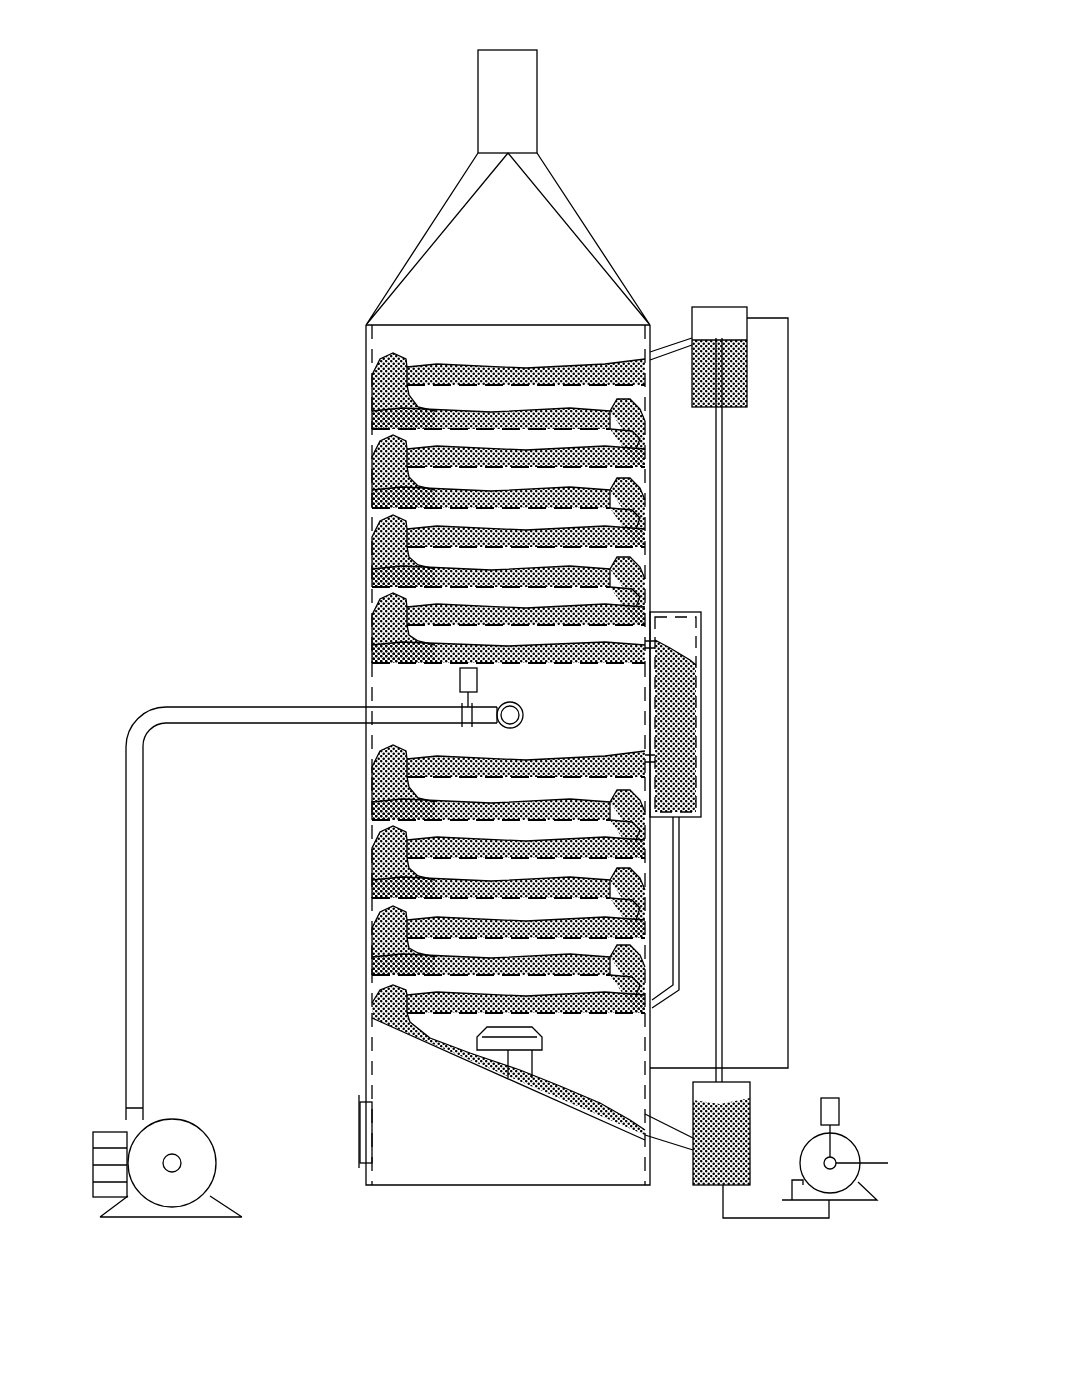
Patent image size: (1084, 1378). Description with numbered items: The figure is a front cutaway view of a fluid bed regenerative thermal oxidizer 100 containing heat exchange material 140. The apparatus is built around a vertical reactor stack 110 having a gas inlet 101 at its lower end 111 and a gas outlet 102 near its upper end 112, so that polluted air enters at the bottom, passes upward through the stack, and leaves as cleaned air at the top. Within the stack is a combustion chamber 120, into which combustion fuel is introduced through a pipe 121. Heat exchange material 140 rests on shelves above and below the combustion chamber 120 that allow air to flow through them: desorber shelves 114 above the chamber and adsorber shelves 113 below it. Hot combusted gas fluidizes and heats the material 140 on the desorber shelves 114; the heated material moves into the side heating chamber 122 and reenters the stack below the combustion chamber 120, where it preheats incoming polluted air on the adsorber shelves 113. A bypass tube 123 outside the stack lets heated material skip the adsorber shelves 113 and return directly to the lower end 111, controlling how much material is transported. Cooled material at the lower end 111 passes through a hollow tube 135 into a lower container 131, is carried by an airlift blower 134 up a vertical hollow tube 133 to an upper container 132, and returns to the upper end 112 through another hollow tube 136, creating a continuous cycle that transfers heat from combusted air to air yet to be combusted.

The fluid bed regenerative thermal oxidizer 100 is at (750, 88).
The gas inlet 101 is at (358, 1133).
The gas outlet 102 is at (515, 50).
The vertical reactor stack 110 is at (365, 640).
The lower end 111 is at (365, 938).
The upper end 112 is at (365, 352).
The adsorber shelves 113 is at (427, 820).
The desorber shelves 114 is at (417, 467).
The combustion chamber 120 is at (405, 688).
The pipe 121 is at (127, 892).
The side heating chamber 122 is at (683, 692).
The bypass tube 123 is at (679, 900).
The lower container 131 is at (743, 1093).
The upper container 132 is at (728, 313).
The vertical hollow tube 133 is at (723, 563).
The airlift blower 134 is at (843, 1145).
The hollow tube 135 is at (683, 1147).
The hollow tube 136 is at (667, 340).
The heat exchange material 140 is at (420, 365).